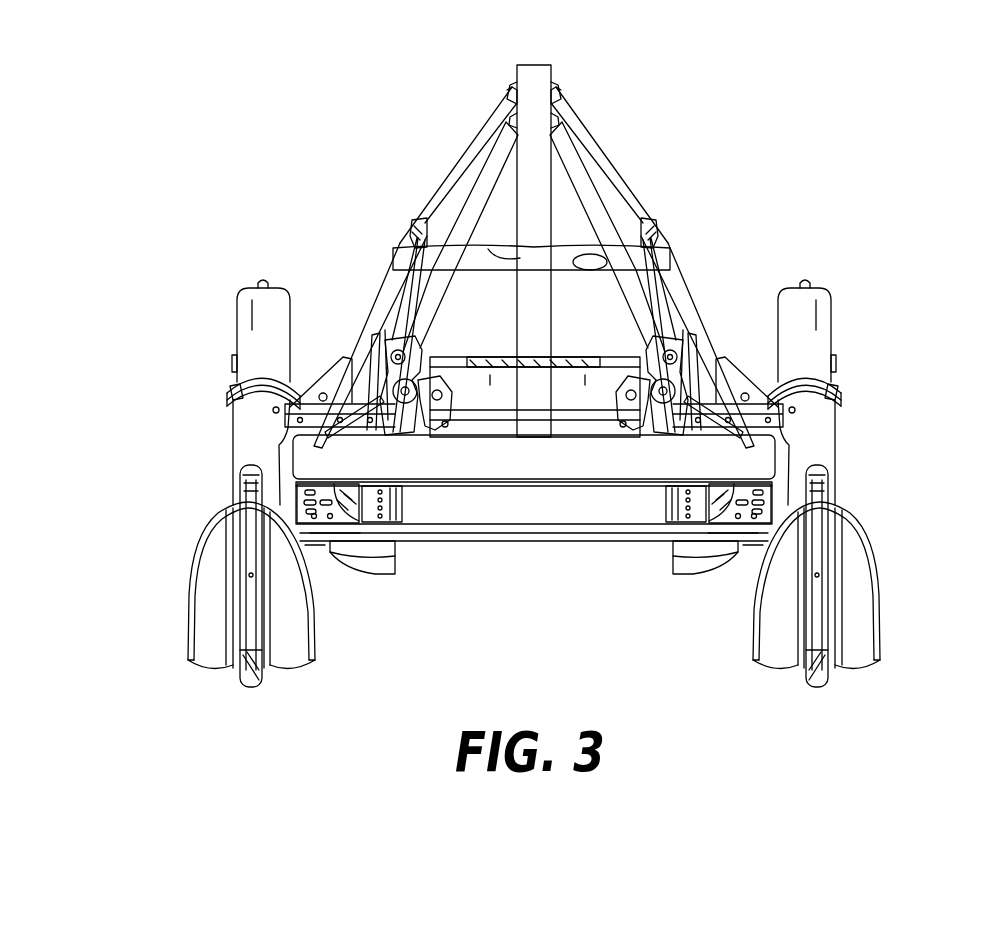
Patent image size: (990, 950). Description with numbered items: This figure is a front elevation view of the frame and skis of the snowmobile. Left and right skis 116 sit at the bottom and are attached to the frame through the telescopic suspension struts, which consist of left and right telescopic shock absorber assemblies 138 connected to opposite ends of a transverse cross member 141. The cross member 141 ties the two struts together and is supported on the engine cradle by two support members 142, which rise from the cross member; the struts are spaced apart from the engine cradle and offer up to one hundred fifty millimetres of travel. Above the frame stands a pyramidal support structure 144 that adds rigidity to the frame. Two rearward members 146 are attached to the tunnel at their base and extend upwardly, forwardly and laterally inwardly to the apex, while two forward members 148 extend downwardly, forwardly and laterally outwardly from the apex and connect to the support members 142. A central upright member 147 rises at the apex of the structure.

The skis 116 is at (210, 608).
The telescopic shock absorber assemblies 138 is at (260, 423).
The transverse cross member 141 is at (480, 463).
The support members 142 is at (365, 310).
The pyramidal support structure 144 is at (298, 138).
The rearward members 146 is at (413, 308).
The mast 147 is at (563, 96).
The forward members 148 is at (455, 177).